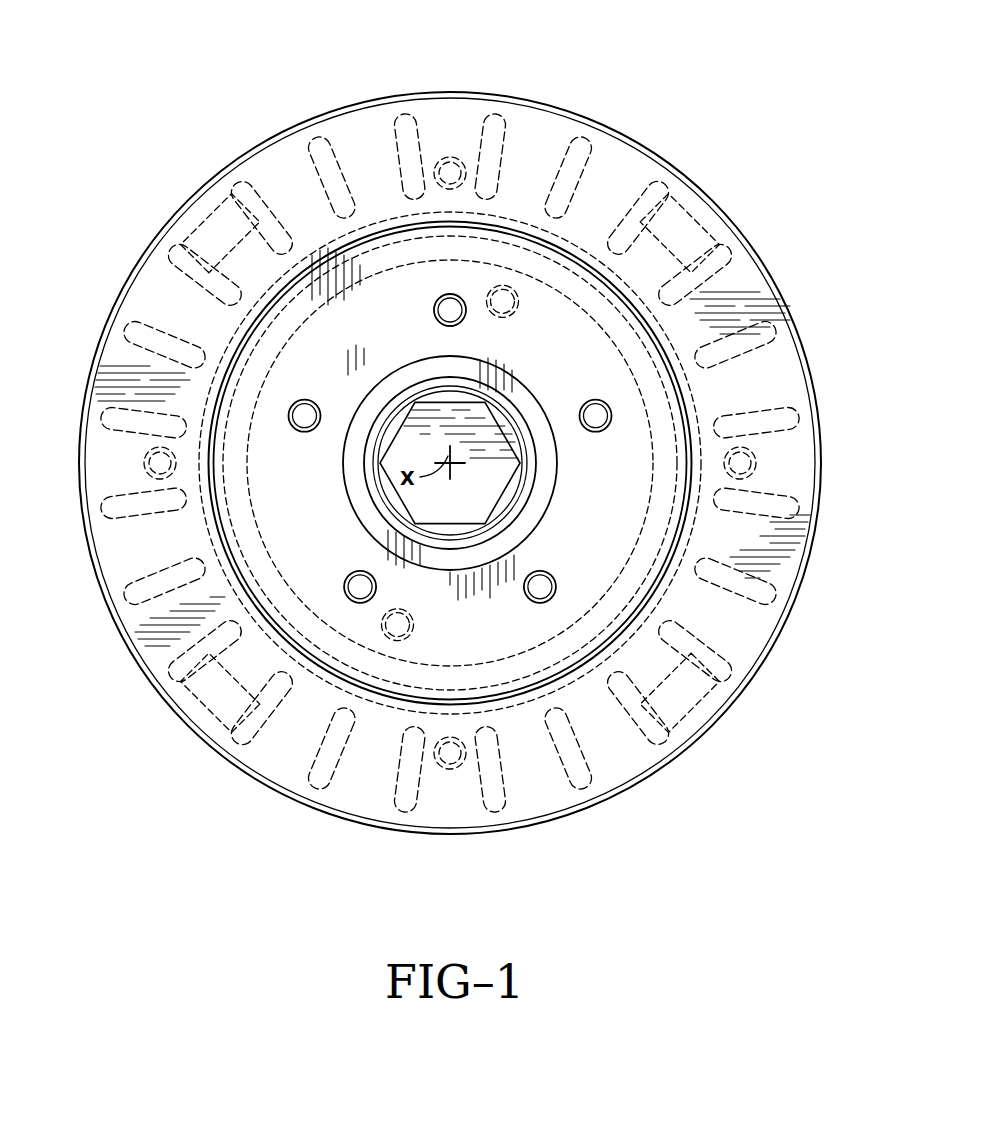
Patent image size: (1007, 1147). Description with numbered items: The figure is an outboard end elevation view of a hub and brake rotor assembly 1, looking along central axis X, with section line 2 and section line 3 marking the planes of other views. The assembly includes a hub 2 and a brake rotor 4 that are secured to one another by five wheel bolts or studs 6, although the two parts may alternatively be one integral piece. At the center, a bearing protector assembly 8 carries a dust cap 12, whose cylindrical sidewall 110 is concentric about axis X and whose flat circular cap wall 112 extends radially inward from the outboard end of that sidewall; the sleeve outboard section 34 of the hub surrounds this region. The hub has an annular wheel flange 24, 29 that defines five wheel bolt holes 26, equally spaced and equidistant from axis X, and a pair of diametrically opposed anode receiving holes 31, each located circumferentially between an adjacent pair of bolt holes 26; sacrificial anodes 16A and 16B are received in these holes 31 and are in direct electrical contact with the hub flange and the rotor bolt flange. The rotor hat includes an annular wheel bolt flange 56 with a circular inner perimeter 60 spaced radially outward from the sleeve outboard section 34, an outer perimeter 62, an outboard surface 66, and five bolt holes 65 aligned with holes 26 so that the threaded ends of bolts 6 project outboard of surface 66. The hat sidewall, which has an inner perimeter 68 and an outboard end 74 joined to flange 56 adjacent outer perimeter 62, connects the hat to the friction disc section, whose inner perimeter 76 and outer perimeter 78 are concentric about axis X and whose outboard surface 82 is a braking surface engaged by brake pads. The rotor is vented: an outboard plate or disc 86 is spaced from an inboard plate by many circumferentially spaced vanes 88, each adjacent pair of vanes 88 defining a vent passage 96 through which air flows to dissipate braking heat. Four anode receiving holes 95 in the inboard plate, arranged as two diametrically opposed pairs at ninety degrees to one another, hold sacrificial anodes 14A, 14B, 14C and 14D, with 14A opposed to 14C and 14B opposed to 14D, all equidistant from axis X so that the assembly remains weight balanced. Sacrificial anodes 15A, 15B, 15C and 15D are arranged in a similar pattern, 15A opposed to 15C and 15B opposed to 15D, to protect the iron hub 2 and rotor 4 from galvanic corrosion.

The hub and brake rotor assembly 1 is at (238, 77).
The hub 2 is at (450, 282).
The section line 3- 3 is at (510, 280).
The brake rotor 4 is at (276, 120).
The wheel bolts or studs 6 is at (447, 298).
The bearing protector assembly 8 is at (527, 454).
The dust cap 12 is at (432, 505).
The sacrificial anode 14A is at (432, 165).
The sacrificial anode 14B is at (742, 480).
The sacrificial anode 14C is at (463, 760).
The sacrificial anode 14D is at (158, 480).
The sacrificial anode 15A is at (688, 188).
The sacrificial anode 15B is at (733, 733).
The sacrificial anode 15C is at (222, 724).
The sacrificial anode 15D is at (192, 200).
The sacrificial anode 16A is at (498, 330).
The sacrificial anode 16B is at (385, 620).
The annular wheel flange 24 is at (704, 385).
The flange surface 29 is at (648, 400).
The wheel bolt holes 26 is at (436, 314).
The anode receiving holes 31 is at (513, 326).
The sleeve outboard section 34 is at (517, 405).
The annular wheel bolt flange 56 is at (268, 410).
The circular inner perimeter 60 is at (352, 462).
The outer perimeter 62 is at (655, 598).
The bolt holes 65 is at (452, 472).
The outboard surface 66 is at (585, 529).
The inner perimeter 68 is at (668, 528).
The outboard end 74 is at (241, 353).
The inner perimeter 76 is at (278, 353).
The outer perimeter 78 is at (254, 148).
The outboard surface 82 is at (303, 194).
The outboard plate or disc 86 is at (162, 284).
The vanes 88 is at (403, 108).
The anode receiving holes 95 is at (432, 177).
The vent passages 96 is at (366, 122).
The cylindrical sidewall 110 is at (397, 428).
The flat circular cap wall 112 is at (470, 507).